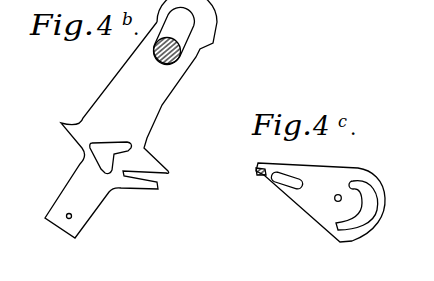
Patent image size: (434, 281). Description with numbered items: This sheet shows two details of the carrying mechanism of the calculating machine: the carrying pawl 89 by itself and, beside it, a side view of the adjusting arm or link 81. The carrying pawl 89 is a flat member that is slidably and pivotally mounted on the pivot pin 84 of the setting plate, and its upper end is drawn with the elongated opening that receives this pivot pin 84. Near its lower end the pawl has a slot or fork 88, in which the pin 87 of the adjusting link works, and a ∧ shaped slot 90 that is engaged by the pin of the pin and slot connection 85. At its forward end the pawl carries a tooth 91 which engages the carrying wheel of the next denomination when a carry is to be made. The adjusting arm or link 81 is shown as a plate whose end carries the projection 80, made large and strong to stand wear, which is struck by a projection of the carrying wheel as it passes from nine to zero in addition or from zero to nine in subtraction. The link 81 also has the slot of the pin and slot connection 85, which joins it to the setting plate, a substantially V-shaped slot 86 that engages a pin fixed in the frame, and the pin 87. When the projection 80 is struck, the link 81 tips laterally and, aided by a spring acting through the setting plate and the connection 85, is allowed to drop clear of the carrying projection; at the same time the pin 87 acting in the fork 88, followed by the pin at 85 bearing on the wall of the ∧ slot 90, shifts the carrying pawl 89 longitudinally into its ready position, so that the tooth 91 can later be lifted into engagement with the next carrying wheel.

In FIG. 4B, the pivot pin 84 is at (170, 50).
In FIG. 4B, the slot or fork 88 is at (140, 175).
In FIG. 4B, the carrying pawl 89 is at (75, 195).
In FIG. 4B, the ∧ shaped slot 90 is at (108, 143).
In FIG. 4B, the tooth 91 is at (61, 123).
In FIG. 4C, the projection 80 is at (256, 174).
In FIG. 4C, the adjusting arm or link 81 is at (312, 210).
In FIG. 4C, the pin and slot connection 85 is at (287, 184).
In FIG. 4C, the V-shaped slot 86 is at (355, 218).
In FIG. 4C, the pin 87 is at (340, 195).